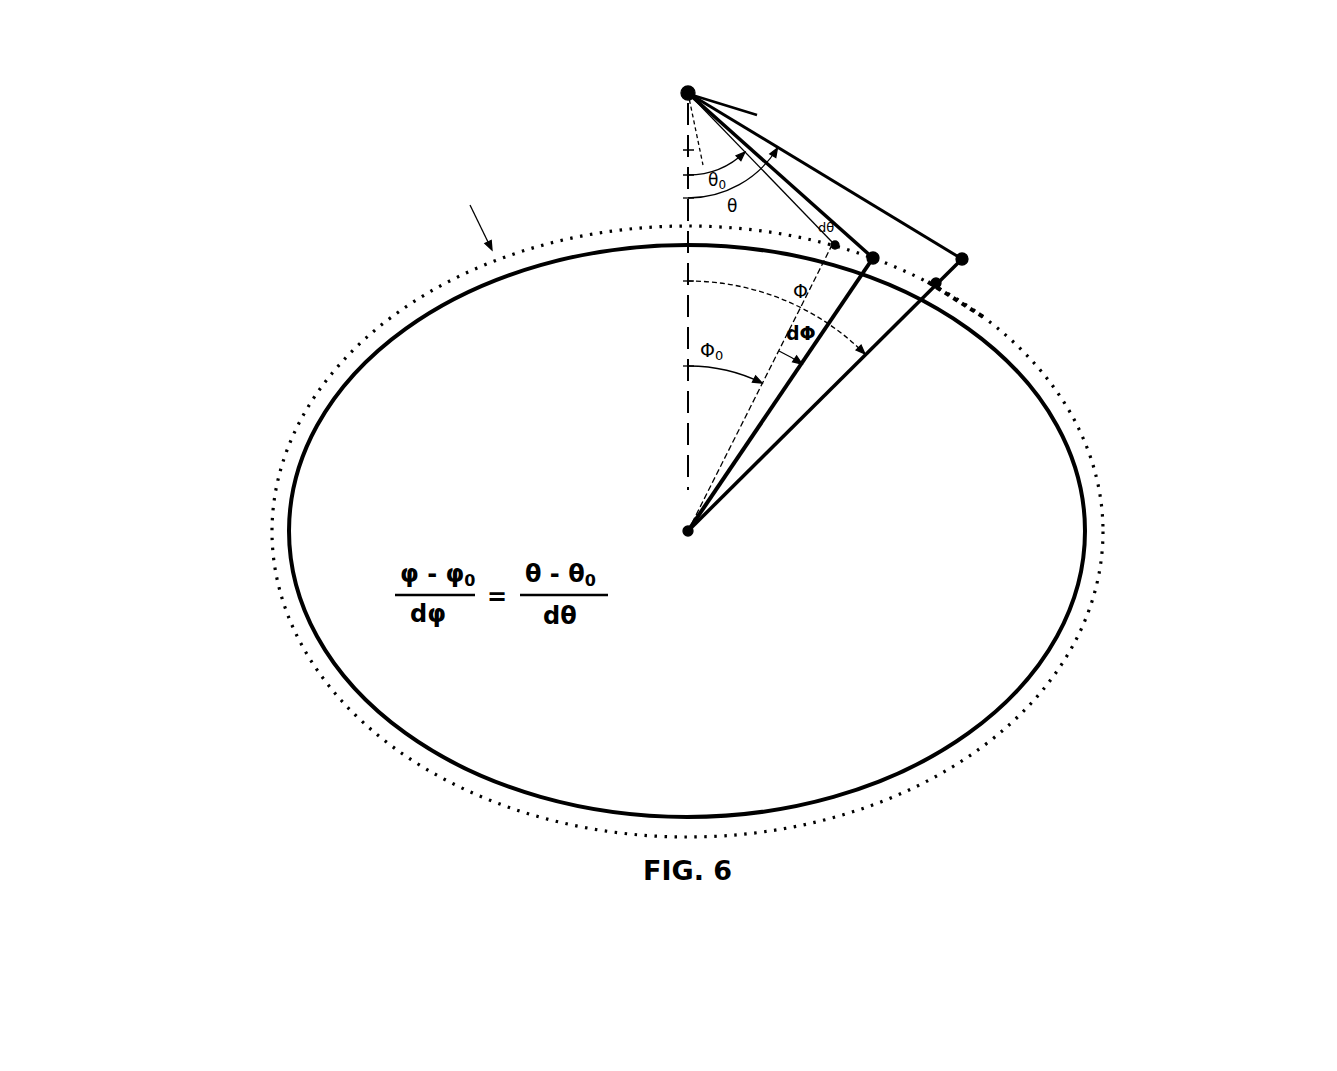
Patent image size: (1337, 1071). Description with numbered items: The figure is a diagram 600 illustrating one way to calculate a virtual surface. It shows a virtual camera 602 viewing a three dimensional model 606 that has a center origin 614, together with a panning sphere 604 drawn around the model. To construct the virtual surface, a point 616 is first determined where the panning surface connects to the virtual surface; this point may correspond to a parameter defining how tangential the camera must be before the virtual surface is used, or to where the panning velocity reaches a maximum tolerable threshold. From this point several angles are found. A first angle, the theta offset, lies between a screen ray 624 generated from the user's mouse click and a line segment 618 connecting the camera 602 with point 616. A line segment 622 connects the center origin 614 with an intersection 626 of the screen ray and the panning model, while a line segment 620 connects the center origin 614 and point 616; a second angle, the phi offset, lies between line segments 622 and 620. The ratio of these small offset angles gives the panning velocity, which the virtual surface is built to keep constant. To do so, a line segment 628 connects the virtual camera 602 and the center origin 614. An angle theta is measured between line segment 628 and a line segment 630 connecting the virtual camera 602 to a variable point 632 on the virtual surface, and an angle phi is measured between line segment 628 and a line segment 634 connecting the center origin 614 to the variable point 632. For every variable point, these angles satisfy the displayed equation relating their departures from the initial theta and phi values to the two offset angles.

The diagram 600 is at (1283, 109).
The virtual camera 602 is at (700, 91).
The panning sphere 604 is at (1108, 540).
The three dimensional model 606 is at (1085, 589).
The center origin 614 is at (686, 531).
The point 616 is at (883, 261).
The line segment 618 is at (878, 245).
The line segment 620 is at (762, 424).
The line segment 622 is at (792, 325).
The screen ray 624 is at (763, 138).
The intersection 626 is at (873, 255).
The line segment 628 is at (687, 187).
The line segment 630 is at (915, 245).
The variable point 632 is at (965, 259).
The line segment 634 is at (987, 319).